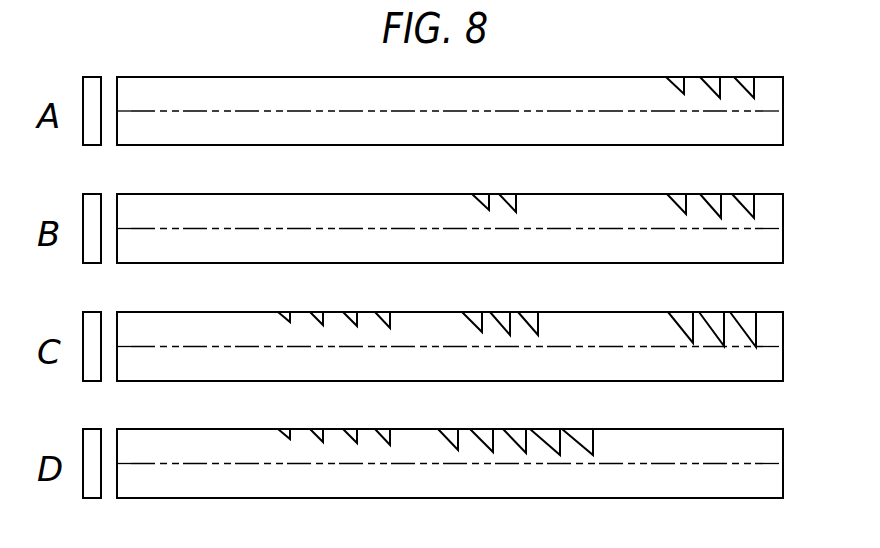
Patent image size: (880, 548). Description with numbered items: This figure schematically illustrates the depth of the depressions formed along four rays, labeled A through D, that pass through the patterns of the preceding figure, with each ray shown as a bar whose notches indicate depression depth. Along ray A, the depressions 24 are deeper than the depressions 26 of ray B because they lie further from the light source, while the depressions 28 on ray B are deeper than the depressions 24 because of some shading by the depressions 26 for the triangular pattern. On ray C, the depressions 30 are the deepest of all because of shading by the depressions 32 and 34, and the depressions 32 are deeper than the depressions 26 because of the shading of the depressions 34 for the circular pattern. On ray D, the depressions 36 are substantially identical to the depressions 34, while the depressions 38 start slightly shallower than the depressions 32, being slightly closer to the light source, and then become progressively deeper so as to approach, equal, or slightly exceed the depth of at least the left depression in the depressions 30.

The depressions 24 is at (715, 61).
The depressions 26 is at (501, 176).
The depressions 28 is at (713, 178).
The depressions 30 is at (711, 296).
The depressions 32 is at (508, 295).
The depressions 34 is at (334, 296).
The depressions 36 is at (334, 413).
The depressions 38 is at (514, 413).